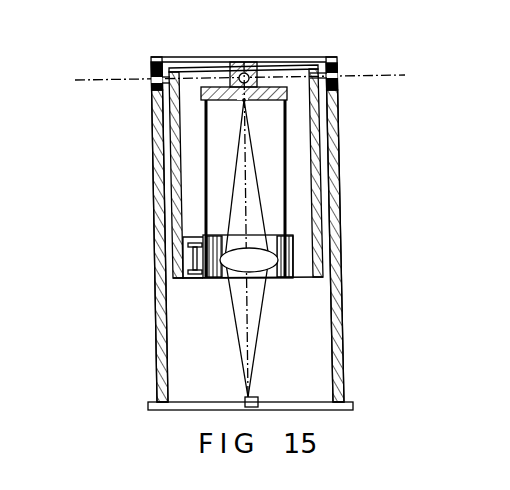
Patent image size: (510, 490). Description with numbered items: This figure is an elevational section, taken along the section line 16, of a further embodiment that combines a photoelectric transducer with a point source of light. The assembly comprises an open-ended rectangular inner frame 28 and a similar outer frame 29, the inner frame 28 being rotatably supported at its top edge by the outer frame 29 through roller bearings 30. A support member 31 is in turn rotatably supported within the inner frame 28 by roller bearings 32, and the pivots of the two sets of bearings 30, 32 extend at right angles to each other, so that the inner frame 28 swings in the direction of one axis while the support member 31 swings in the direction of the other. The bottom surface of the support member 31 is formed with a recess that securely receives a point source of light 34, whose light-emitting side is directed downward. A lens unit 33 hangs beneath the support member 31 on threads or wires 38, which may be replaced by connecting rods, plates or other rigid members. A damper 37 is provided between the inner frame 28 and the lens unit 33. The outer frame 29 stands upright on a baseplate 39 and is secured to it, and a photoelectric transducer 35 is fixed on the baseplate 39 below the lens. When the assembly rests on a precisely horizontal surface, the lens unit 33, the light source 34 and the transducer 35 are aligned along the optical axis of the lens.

The section line 16 is at (235, 75).
The inner frame 28 is at (172, 192).
The outer frame 29 is at (155, 232).
The roller bearings 30 is at (150, 88).
The support member 31 is at (273, 85).
The roller bearings 32 is at (230, 70).
The lens unit 33 is at (292, 257).
The point source of light 34 is at (248, 101).
The photoelectric transducer 35 is at (258, 400).
The damper 37 is at (192, 279).
The threads or wires 38 is at (206, 153).
The baseplate 39 is at (168, 411).